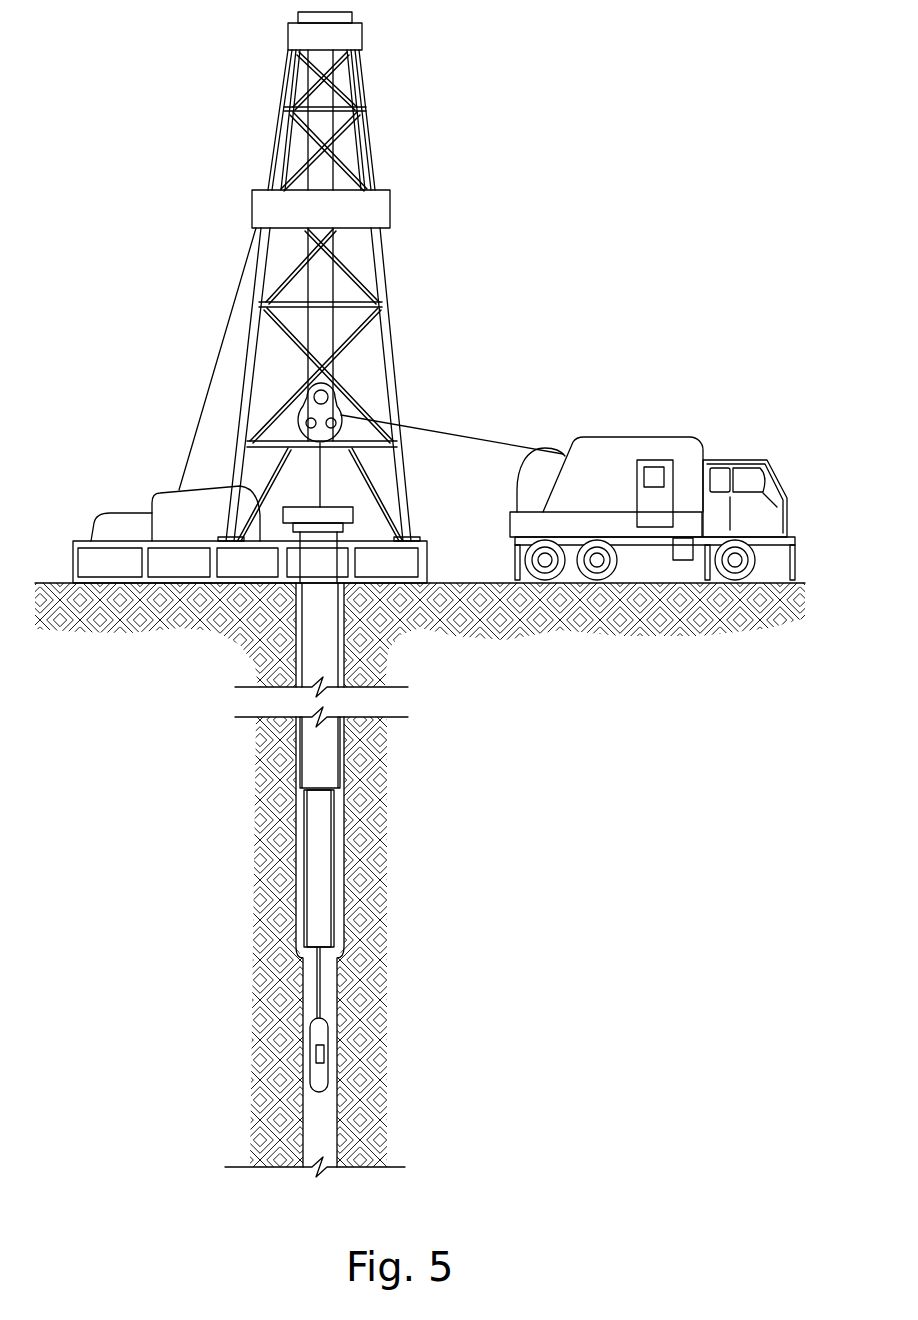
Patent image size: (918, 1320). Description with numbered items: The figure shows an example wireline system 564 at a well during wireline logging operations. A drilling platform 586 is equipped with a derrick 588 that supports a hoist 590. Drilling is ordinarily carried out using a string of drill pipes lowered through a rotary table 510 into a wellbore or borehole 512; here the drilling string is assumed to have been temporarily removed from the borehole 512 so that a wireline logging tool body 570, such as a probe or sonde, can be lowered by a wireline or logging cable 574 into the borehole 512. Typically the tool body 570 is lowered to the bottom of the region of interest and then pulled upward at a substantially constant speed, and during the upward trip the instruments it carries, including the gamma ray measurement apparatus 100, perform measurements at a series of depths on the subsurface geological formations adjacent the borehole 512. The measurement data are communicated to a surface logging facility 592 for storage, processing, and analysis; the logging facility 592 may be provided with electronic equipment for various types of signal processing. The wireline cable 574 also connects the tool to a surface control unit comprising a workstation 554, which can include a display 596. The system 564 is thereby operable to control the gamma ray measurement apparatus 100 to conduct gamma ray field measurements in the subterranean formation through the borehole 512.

The wireline system 564 is at (592, 219).
The hoist 590 is at (336, 396).
The wireline or logging cable 574 is at (440, 431).
The surface logging facility 592 is at (596, 436).
The display 596 is at (654, 466).
The workstation 554 is at (635, 503).
The rotary table 510 is at (352, 506).
The derrick 588 is at (417, 533).
The drilling platform 586 is at (428, 574).
The borehole 512 is at (300, 972).
The wireline logging tool body 570 is at (324, 1027).
The gamma ray measurement apparatus 100 is at (329, 1057).